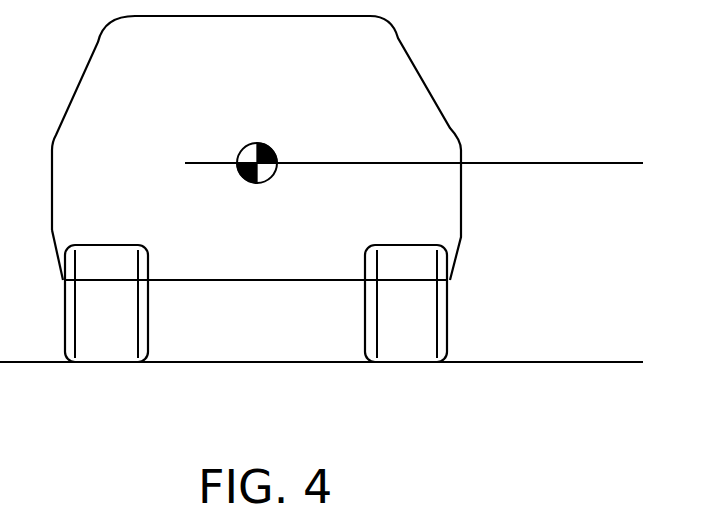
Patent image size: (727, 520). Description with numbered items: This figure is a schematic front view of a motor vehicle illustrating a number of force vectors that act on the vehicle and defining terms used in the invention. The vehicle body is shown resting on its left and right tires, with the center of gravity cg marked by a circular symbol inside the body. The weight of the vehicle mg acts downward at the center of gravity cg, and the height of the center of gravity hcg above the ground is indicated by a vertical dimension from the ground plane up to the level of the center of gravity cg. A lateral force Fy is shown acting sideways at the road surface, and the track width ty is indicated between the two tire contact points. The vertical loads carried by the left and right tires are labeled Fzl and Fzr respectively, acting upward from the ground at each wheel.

The center of gravity cg is at (414, 144).
The gravitational force mg is at (257, 141).
The height of center of gravity hcg is at (630, 164).
The lateral force Fy is at (457, 351).
The track width ty is at (410, 352).
The left vertical wheel load Fzl is at (103, 362).
The right vertical wheel load Fzr is at (410, 362).